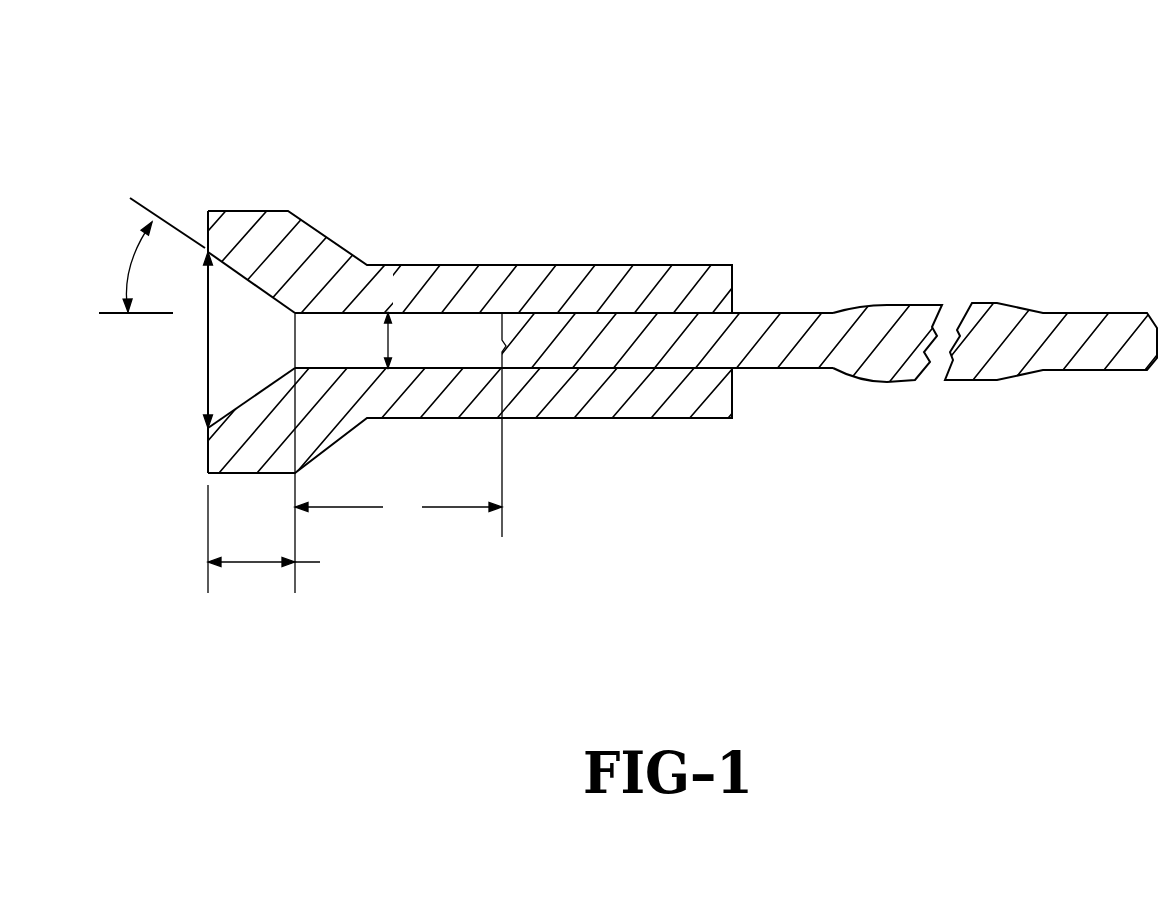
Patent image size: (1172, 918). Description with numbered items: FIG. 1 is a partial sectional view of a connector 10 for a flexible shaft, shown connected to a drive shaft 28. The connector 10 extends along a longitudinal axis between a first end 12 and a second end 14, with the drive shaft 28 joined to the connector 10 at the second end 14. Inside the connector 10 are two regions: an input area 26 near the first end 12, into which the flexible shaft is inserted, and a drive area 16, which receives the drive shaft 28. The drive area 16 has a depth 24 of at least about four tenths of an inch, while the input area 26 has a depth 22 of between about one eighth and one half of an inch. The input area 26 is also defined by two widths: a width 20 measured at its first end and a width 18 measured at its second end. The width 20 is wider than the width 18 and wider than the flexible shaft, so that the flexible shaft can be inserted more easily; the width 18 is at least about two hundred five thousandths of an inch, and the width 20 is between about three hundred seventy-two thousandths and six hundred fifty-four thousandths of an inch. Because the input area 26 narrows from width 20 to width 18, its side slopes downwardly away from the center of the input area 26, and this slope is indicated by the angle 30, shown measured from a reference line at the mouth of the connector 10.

The connector 10 is at (525, 513).
The first end 12 is at (257, 172).
The second end 14 is at (737, 267).
The drive area 16 is at (407, 332).
The width 18 is at (387, 341).
The width 20 is at (208, 342).
The depth 22 is at (288, 563).
The depth 24 is at (398, 507).
The input area 26 is at (178, 400).
The drive shaft 28 is at (810, 353).
The angle 30 is at (152, 218).